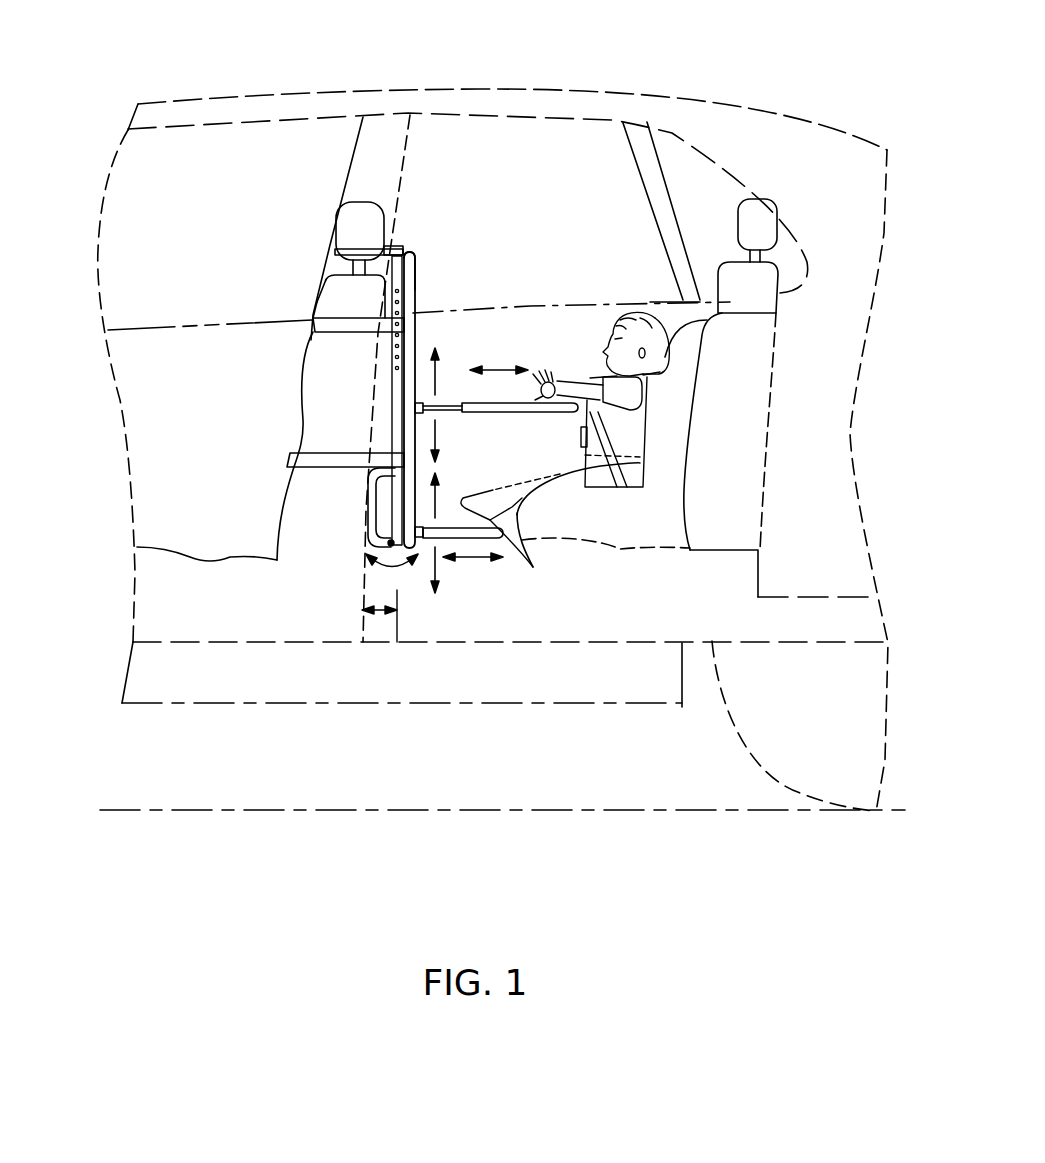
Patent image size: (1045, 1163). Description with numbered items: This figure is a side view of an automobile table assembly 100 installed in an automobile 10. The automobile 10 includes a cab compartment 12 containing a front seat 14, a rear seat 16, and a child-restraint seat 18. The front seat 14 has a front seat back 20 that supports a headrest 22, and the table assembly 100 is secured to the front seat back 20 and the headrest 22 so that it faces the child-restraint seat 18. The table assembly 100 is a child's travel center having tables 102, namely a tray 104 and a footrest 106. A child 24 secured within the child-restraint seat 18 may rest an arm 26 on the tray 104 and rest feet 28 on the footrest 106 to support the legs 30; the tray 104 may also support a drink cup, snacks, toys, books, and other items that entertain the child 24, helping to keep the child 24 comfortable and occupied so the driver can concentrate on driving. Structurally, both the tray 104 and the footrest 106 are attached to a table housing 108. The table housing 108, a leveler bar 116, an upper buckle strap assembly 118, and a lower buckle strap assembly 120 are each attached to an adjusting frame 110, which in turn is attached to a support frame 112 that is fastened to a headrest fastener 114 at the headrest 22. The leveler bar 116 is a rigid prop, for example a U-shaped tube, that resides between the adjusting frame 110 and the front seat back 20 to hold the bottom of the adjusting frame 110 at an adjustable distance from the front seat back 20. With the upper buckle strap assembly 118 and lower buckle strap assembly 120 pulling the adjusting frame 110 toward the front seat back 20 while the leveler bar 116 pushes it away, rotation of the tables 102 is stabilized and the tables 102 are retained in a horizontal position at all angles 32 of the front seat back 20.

The automobile 10 is at (828, 147).
The cab compartment 12 is at (143, 207).
The front seat 14 is at (300, 373).
The rear seat 16 is at (762, 213).
The child-restraint seat 18 is at (680, 392).
The front seat back 20 is at (357, 390).
The headrest 22 is at (336, 255).
The child 24 is at (650, 325).
The arm 26 is at (557, 380).
The feet 28 is at (533, 567).
The legs 30 is at (640, 463).
The angles 32 is at (383, 612).
The automobile table assembly 100 is at (416, 287).
The tables 102 is at (418, 548).
The tray 104 is at (468, 402).
The footrest 106 is at (473, 540).
The table housing 108 is at (415, 258).
The adjusting frame 110 is at (390, 413).
The support frame 112 is at (402, 246).
The headrest fastener 114 is at (367, 250).
The leveler bar 116 is at (370, 502).
The upper buckle strap assembly 118 is at (331, 327).
The lower buckle strap assembly 120 is at (298, 460).